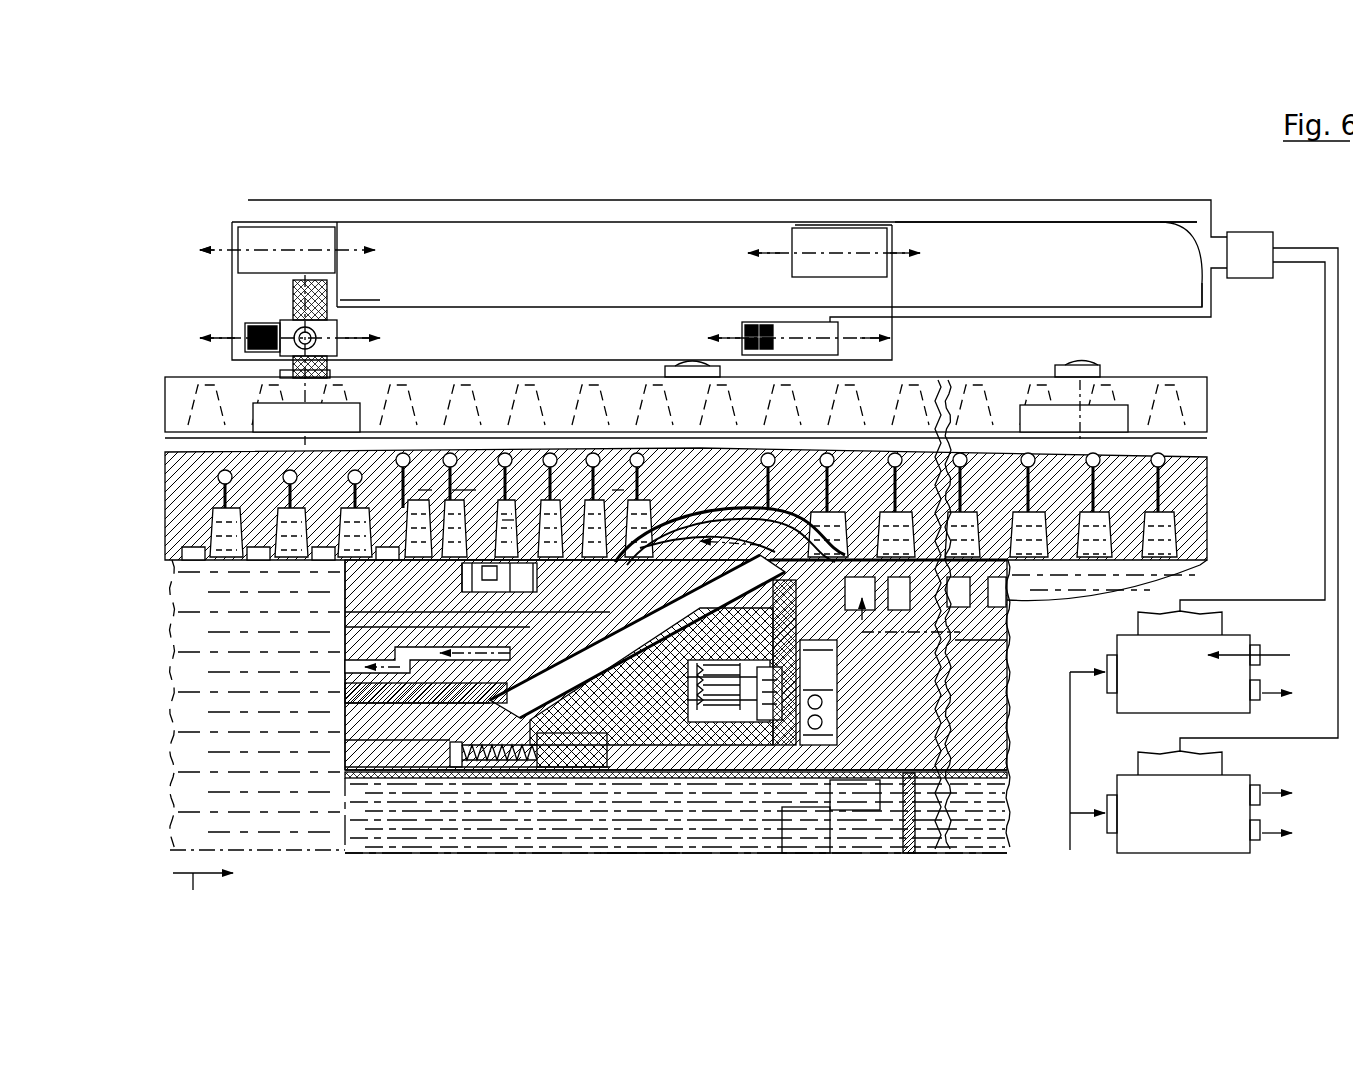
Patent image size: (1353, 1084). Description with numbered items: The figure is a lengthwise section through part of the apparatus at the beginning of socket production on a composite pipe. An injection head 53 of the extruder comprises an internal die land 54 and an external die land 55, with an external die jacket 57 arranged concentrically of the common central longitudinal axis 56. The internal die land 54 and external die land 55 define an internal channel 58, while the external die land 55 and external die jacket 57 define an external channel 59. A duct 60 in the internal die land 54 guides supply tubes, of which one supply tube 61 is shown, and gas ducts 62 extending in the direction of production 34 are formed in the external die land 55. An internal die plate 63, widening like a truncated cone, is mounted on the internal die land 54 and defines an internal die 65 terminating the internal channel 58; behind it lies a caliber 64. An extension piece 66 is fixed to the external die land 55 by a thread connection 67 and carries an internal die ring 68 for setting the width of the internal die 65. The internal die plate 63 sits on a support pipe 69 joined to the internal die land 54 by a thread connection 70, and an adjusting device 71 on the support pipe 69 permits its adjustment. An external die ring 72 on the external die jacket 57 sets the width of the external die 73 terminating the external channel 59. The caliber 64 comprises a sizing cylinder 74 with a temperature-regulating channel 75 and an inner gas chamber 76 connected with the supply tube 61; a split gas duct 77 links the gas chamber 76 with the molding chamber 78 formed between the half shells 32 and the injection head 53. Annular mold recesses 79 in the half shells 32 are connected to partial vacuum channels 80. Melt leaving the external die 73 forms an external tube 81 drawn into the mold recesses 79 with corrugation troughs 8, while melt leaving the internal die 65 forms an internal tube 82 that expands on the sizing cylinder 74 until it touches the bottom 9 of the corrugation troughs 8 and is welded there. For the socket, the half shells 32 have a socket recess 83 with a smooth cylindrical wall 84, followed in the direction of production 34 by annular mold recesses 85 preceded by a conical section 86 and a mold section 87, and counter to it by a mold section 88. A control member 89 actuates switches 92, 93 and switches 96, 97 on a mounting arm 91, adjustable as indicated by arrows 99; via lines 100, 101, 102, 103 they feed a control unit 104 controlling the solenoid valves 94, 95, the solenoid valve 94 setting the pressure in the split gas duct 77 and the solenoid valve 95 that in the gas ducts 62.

The corrugation trough 8 is at (1055, 475).
The bottom 9 is at (1122, 548).
The half shells 32 is at (1165, 445).
The direction of production 34 is at (203, 895).
The injection head 53 is at (640, 857).
The internal die land 54 is at (372, 742).
The external die land 55 is at (352, 688).
The central longitudinal axis 56 is at (835, 855).
The external die jacket 57 is at (378, 579).
The internal channel 58 is at (352, 700).
The external channel 59 is at (355, 622).
The duct 60 is at (353, 835).
The supply tube 61 is at (593, 827).
The gas ducts 62 is at (355, 665).
The internal die plate 63 is at (655, 715).
The caliber 64 is at (1020, 628).
The internal die 65 is at (680, 520).
The extension piece 66 is at (460, 748).
The thread connection 67 is at (427, 685).
The internal die ring 68 is at (763, 668).
The support pipe 69 is at (550, 718).
The thread connection 70 is at (473, 752).
The adjusting device 71 is at (716, 712).
The external die ring 72 is at (558, 548).
The external die 73 is at (640, 520).
The sizing cylinder 74 is at (972, 640).
The temperature-regulating channel 75 is at (926, 790).
The gas chamber 76 is at (990, 698).
The split gas duct 77 is at (830, 550).
The molding chamber 78 is at (850, 675).
The annular mold recesses 79 is at (185, 475).
The partial vacuum channels 80 is at (225, 500).
The external tube 81 is at (618, 490).
The internal tube 82 is at (768, 547).
The socket recess 83 is at (470, 490).
The wall 84 is at (702, 518).
The annular mold recesses 85 is at (510, 520).
The conical section 86 is at (458, 490).
The mold section 87 is at (425, 490).
The mold section 88 is at (770, 540).
The control member 89 is at (300, 300).
The mounting arm 91 is at (590, 246).
The switch 92 is at (262, 242).
The switch 93 is at (803, 250).
The solenoid valve 94 is at (1158, 832).
The solenoid valve 95 is at (1158, 692).
The switch 96 is at (342, 328).
The switch 97 is at (805, 333).
The arrows 99 is at (212, 337).
The line 100 is at (350, 200).
The line 101 is at (1197, 222).
The line 102 is at (387, 303).
The line 103 is at (1167, 220).
The control unit 104 is at (1250, 250).